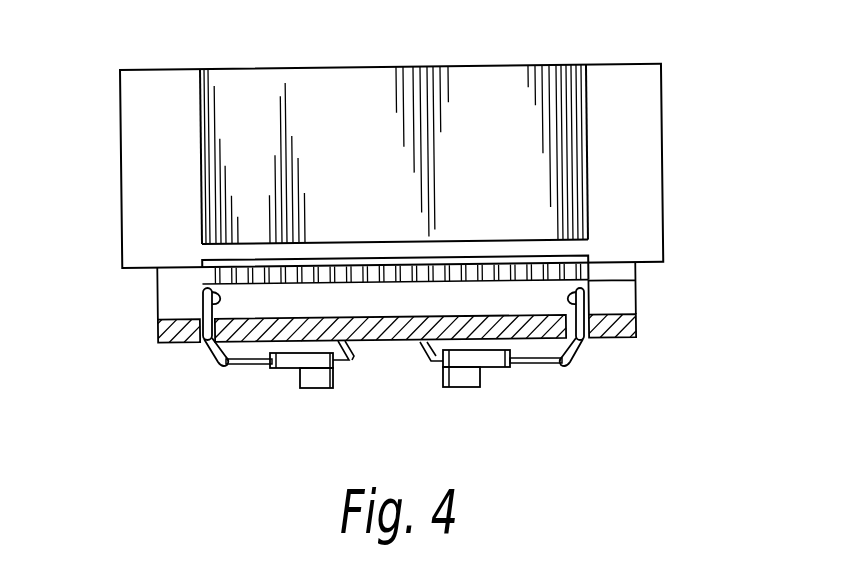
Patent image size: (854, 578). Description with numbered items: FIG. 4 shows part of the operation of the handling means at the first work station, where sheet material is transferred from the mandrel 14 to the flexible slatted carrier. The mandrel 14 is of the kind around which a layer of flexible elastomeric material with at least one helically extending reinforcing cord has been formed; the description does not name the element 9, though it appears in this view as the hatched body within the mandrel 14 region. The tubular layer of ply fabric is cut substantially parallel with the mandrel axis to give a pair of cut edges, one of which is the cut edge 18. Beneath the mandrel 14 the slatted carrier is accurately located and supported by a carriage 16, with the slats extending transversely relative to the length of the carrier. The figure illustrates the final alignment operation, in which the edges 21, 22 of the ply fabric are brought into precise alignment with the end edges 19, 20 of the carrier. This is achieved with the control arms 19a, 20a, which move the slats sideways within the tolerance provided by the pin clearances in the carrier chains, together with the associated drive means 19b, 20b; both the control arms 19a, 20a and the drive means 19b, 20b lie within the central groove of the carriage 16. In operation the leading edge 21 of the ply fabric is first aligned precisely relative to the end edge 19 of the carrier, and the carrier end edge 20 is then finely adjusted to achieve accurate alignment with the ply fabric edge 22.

The fibrous filling material 9 is at (327, 93).
The mandrel 14 is at (629, 88).
The carriage 16 is at (157, 337).
The cut edge 18 is at (572, 256).
The end edge of the carrier 19 is at (197, 277).
The control arm 19a is at (217, 358).
The drive means 19b is at (301, 388).
The end edge of the carrier 20 is at (587, 277).
The control arm 20a is at (672, 400).
The drive means 20b is at (573, 435).
The leading edge of the ply fabric 21 is at (199, 197).
The ply fabric edge 22 is at (587, 205).